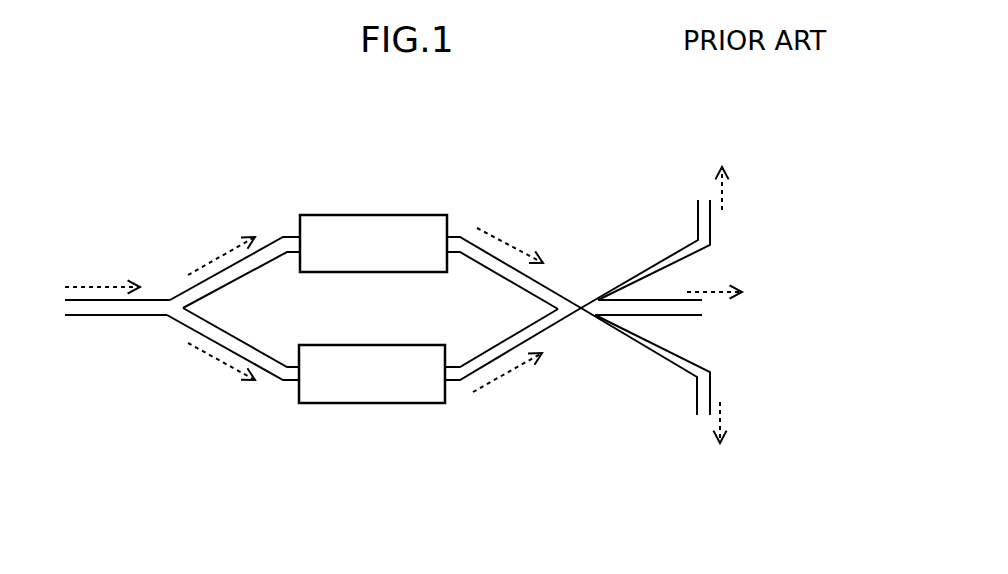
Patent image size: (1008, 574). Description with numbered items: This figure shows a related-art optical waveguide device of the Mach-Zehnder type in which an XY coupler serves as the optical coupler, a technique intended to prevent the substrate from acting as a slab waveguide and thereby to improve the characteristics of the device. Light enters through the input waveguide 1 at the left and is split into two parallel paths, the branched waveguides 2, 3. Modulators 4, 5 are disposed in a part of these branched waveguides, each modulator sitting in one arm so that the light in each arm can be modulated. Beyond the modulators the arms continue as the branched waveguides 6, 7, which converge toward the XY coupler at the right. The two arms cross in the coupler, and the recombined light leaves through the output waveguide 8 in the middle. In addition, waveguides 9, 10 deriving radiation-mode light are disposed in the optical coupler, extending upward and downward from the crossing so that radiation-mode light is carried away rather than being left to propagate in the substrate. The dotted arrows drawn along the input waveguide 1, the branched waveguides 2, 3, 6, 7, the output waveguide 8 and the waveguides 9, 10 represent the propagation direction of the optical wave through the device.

The input waveguide 1 is at (125, 307).
The branched waveguide 2 is at (273, 248).
The branched waveguide 3 is at (280, 368).
The modulator 4 is at (375, 242).
The modulator 5 is at (372, 373).
The branched waveguide 6 is at (453, 245).
The branched waveguide 7 is at (455, 372).
The output waveguide 8 is at (683, 310).
The waveguide deriving radiation-mode light 9 is at (650, 270).
The waveguide deriving radiation-mode light 10 is at (652, 347).